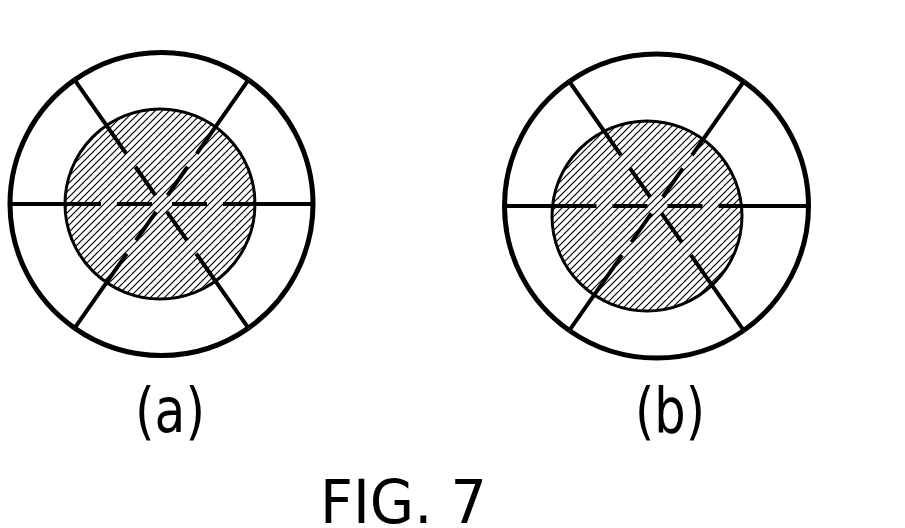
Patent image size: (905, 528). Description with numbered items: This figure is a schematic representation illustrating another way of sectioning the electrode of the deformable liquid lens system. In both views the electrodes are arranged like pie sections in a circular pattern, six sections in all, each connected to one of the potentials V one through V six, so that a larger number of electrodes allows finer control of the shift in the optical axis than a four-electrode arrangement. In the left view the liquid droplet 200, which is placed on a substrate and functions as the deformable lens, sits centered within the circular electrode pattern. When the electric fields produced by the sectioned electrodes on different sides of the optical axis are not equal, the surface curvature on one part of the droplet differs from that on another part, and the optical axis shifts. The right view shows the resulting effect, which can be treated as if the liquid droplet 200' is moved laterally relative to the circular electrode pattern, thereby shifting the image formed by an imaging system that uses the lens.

The liquid droplet 200 is at (226, 204).
The laterally shifted liquid droplet 200' is at (578, 244).